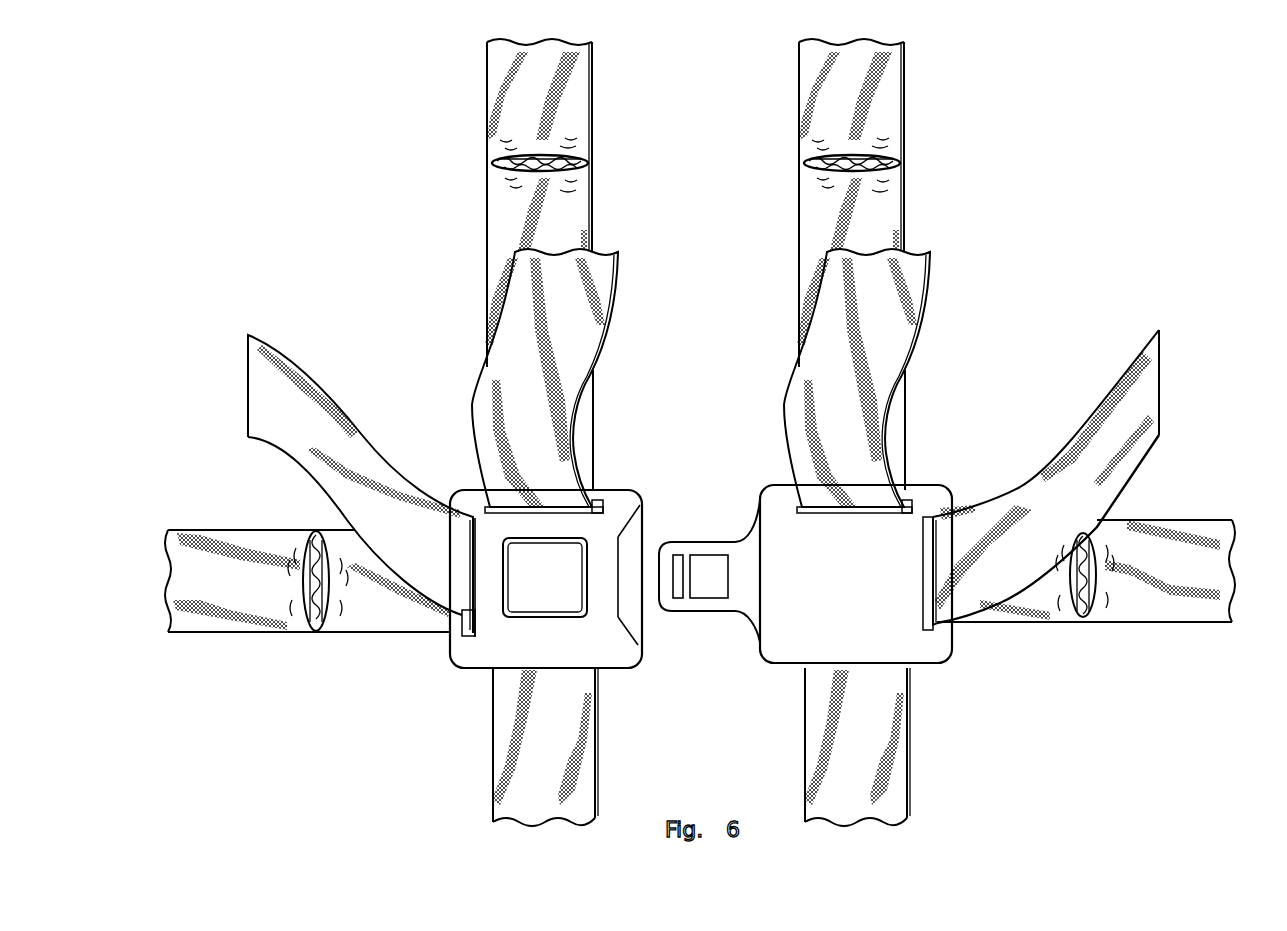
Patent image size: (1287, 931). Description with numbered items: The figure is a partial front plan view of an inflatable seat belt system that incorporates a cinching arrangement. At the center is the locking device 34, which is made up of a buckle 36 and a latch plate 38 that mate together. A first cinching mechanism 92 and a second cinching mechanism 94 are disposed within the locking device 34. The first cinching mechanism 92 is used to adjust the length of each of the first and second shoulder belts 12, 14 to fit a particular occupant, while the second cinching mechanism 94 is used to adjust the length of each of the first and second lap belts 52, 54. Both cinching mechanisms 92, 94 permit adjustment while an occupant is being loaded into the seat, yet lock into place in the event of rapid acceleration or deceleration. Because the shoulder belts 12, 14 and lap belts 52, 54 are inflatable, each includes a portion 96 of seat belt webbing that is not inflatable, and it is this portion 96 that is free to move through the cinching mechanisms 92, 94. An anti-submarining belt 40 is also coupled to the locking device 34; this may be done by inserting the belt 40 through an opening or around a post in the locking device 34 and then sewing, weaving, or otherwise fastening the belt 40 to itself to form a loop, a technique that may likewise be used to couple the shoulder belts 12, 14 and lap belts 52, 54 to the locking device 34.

The first shoulder belt 12 is at (585, 97).
The second shoulder belt 14 is at (893, 97).
The locking device 34 is at (655, 500).
The buckle 36 is at (562, 650).
The latch plate 38 is at (872, 595).
The anti-submarining belt 40 is at (505, 755).
The first lap belt 52 is at (230, 533).
The second lap belt 54 is at (1200, 527).
The first cinching mechanism 92 is at (600, 492).
The second cinching mechanism 94 is at (452, 628).
The portion of the seat belt webbing 96 is at (605, 292).